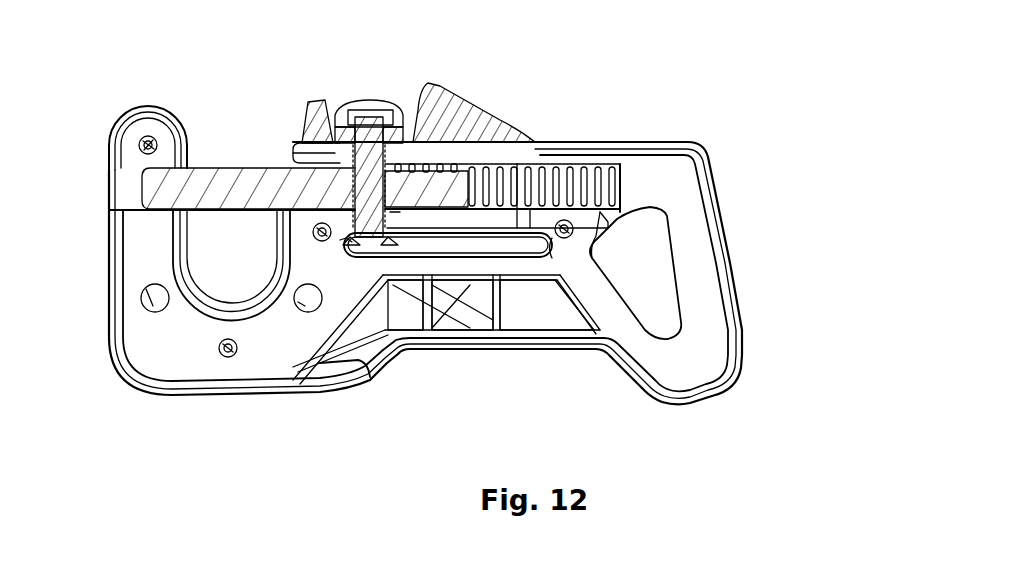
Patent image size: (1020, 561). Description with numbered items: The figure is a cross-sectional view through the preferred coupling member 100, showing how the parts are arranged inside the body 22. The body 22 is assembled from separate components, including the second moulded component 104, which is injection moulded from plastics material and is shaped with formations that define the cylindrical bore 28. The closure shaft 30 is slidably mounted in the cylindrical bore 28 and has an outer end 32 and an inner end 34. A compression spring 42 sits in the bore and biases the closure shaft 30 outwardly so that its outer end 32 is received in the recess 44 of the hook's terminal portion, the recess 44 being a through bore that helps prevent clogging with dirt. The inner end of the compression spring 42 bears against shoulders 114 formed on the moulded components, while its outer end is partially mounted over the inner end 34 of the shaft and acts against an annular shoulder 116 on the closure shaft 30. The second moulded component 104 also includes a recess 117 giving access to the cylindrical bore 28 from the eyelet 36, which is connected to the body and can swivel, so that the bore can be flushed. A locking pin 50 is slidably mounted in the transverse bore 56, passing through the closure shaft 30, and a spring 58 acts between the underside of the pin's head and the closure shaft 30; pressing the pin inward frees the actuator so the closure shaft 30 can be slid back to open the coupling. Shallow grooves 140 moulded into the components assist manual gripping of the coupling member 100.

The coupling member 100 is at (684, 66).
The body 22 is at (684, 139).
The cylindrical bore 28 is at (605, 154).
The closure shaft 30 is at (261, 166).
The outer end 32 is at (148, 190).
The inner end 34 is at (444, 207).
The eyelet 36 is at (668, 265).
The compression spring 42 is at (601, 213).
The recess 44 is at (125, 208).
The locking pin 50 is at (350, 185).
The transverse bore 56 is at (350, 244).
The spring 58 is at (393, 152).
The second moulded component 104 is at (108, 284).
The shoulders 114 is at (624, 186).
The annular shoulder 116 is at (395, 214).
The recess 117 is at (608, 221).
The shallow grooves 140 is at (535, 328).